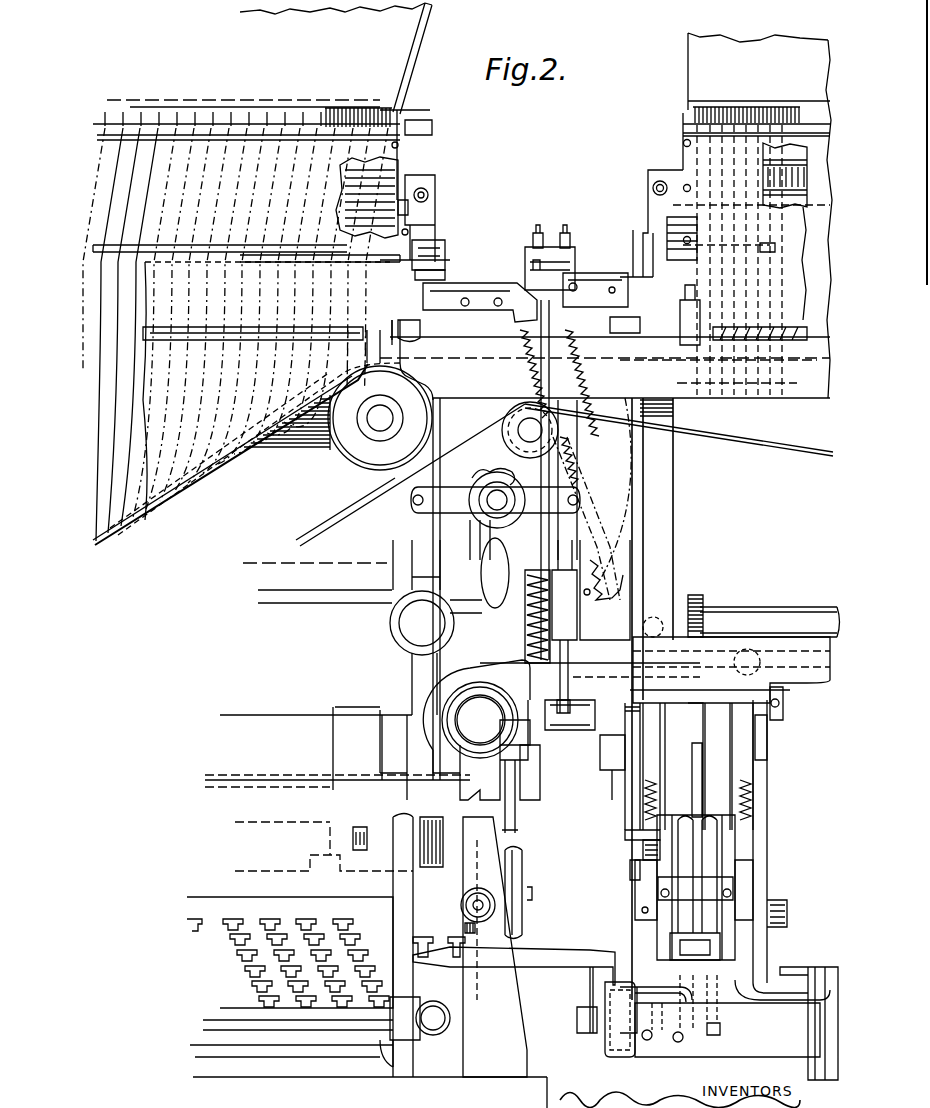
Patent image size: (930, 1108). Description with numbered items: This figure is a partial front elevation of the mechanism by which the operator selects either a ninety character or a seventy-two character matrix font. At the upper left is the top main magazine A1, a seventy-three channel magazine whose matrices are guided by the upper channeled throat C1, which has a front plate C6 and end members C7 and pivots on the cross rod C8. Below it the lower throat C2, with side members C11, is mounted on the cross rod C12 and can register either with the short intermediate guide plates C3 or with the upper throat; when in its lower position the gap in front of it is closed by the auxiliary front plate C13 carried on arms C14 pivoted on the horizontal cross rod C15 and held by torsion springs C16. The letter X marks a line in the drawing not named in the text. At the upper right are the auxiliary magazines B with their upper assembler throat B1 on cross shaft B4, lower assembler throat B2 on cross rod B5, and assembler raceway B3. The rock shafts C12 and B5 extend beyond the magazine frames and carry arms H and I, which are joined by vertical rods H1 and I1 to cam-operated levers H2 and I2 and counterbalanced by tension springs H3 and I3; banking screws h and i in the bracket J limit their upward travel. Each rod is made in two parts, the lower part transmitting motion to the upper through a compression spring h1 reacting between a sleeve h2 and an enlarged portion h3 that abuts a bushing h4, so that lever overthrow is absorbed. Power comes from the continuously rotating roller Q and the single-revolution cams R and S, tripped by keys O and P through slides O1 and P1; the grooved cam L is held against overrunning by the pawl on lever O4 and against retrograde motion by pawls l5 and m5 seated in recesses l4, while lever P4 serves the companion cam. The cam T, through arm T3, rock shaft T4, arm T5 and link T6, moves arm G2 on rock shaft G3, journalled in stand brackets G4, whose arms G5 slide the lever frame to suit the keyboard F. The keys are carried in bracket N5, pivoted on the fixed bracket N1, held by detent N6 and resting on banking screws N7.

The main magazine A1 is at (403, 53).
The line of type / printing line X is at (352, 112).
The upper channeled throat C1 is at (212, 118).
The lower channeled throat C2 is at (250, 187).
The short intermediate guide plates C3 is at (433, 177).
The front plate C6 is at (95, 250).
The end members C7 is at (432, 160).
The cross rod C8 is at (422, 255).
The side members C11 is at (416, 240).
The cross rod C12 is at (435, 290).
The auxiliary front plate C13 is at (143, 327).
The arms C14 is at (425, 270).
The horizontal cross rod C15 is at (326, 360).
The torsion springs C16 is at (382, 342).
The banking screw h is at (540, 245).
The banking screw i is at (566, 245).
The bracket J is at (578, 256).
The arm I is at (582, 302).
The arm H is at (518, 325).
The vertical rod H1 is at (497, 530).
The lever H2 is at (476, 716).
The tension spring H3 is at (578, 480).
The vertical rod I1 is at (495, 499).
The lever I2 is at (590, 732).
The tension spring I3 is at (612, 512).
The auxiliary magazines B is at (690, 77).
The upper assembler throat B1 is at (682, 155).
The lower assembler throat B2 is at (797, 207).
The assembler raceway B3 is at (756, 219).
The cross shaft B4 is at (767, 247).
The cross rod B5 is at (675, 295).
The spring h1 is at (553, 623).
The sleeve h2 is at (540, 700).
The enlarged portion h3 is at (527, 590).
The bushing h4 is at (525, 573).
The cam T is at (625, 834).
The arm T3 is at (608, 772).
The rock shaft T4 is at (480, 772).
The arm T5 is at (535, 785).
The link T6 is at (540, 800).
The arm G2 is at (520, 825).
The rock shaft G3 is at (415, 826).
The stand brackets G4 is at (330, 822).
The arms G5 is at (360, 827).
The keyboard F is at (308, 906).
The key P is at (546, 953).
The slide P1 is at (710, 973).
The centrally pivoted lever P4 is at (743, 872).
The key O is at (513, 967).
The slide O1 is at (672, 963).
The centrally pivoted lever O4 is at (657, 880).
The roller Q is at (687, 910).
The cam R is at (697, 818).
The cam S is at (755, 815).
The cam L is at (633, 862).
The recesses l4 is at (640, 842).
The spring pressed pawl l5 is at (645, 796).
The spring pressed pawl m5 is at (758, 787).
The fixed bracket N1 is at (730, 768).
The bracket N5 is at (703, 1045).
The detent N6 is at (722, 1030).
The adjustable banking screws N7 is at (647, 1042).